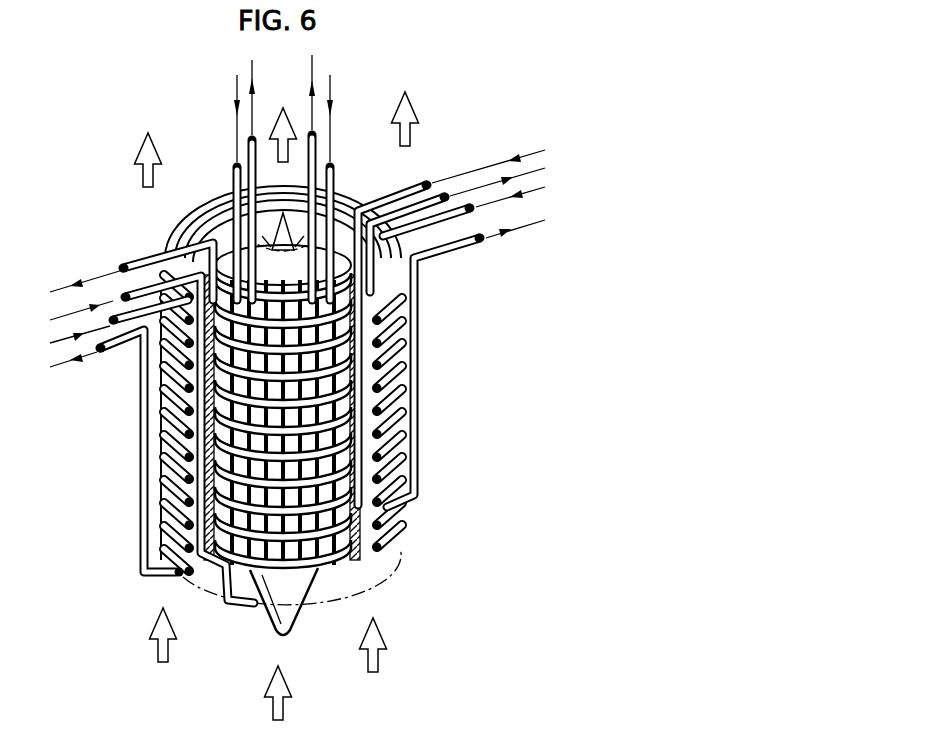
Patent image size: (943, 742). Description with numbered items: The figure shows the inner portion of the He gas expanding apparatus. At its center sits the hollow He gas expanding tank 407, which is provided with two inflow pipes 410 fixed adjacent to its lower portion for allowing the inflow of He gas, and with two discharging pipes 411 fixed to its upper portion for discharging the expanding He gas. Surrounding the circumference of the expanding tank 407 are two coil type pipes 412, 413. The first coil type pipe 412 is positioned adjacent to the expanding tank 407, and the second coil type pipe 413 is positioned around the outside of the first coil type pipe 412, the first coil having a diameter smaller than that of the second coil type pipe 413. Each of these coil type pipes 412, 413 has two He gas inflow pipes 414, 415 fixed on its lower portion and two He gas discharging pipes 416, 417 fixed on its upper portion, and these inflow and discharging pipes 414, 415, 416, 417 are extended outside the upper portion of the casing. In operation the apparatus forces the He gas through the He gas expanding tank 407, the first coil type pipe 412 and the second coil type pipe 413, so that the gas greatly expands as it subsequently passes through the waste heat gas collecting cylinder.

The hollow He gas expanding tank 407 is at (282, 218).
The inflow pipe 410 is at (233, 184).
The discharging pipe 411 is at (250, 158).
The first coil type pipe 412 is at (297, 433).
The second coil type pipe 413 is at (383, 500).
The He gas inflow pipe 414 is at (147, 256).
The He gas inflow pipe 415 is at (112, 328).
The He gas discharging pipe 416 is at (137, 290).
The He gas discharging pipe 417 is at (134, 340).